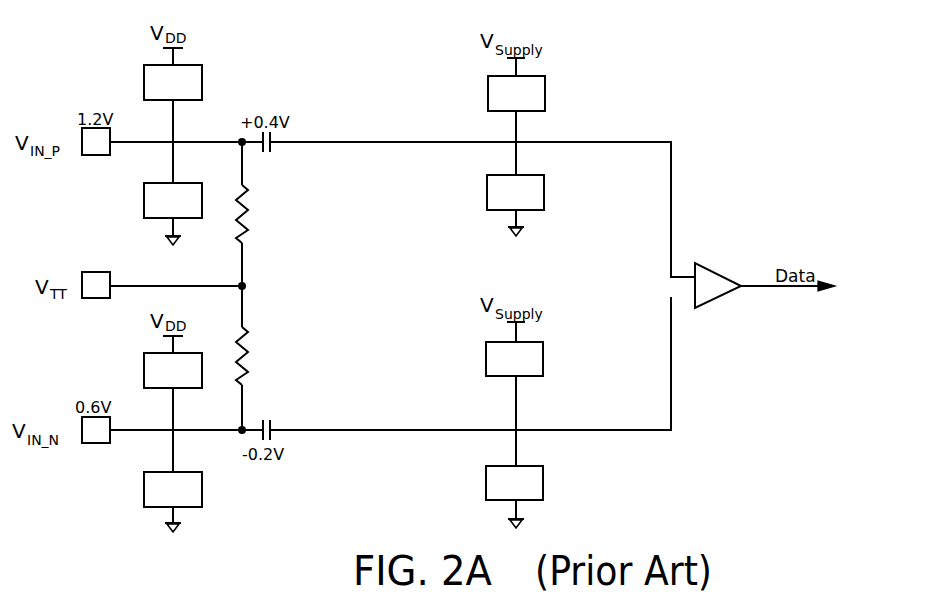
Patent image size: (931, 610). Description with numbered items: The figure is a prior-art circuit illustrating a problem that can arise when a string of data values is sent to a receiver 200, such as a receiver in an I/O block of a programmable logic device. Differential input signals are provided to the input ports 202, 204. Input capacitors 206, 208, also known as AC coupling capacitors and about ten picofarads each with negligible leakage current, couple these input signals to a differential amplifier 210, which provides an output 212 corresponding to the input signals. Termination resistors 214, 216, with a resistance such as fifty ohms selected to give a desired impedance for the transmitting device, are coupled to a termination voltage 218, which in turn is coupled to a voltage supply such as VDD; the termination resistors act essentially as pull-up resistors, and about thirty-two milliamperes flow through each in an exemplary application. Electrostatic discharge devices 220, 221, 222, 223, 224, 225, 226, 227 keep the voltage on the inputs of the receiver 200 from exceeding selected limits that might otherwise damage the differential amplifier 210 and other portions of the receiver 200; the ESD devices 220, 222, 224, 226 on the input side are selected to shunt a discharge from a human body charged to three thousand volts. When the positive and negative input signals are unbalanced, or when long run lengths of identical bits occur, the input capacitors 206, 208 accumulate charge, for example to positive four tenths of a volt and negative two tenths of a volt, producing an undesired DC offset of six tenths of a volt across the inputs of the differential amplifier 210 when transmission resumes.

The receiver 200 is at (724, 103).
The input port 202 is at (93, 156).
The input port 204 is at (93, 444).
The input capacitor 206 is at (272, 146).
The input capacitor 208 is at (272, 426).
The differential amplifier 210 is at (718, 270).
The output 212 is at (757, 290).
The termination resistor 214 is at (250, 217).
The termination resistor 216 is at (250, 357).
The termination voltage 218 is at (94, 271).
The ESD device 220 is at (203, 83).
The ESD device 221 is at (546, 94).
The ESD device 222 is at (203, 208).
The ESD device 223 is at (545, 195).
The ESD device 224 is at (203, 375).
The ESD device 225 is at (544, 360).
The ESD device 226 is at (203, 489).
The ESD device 227 is at (544, 485).